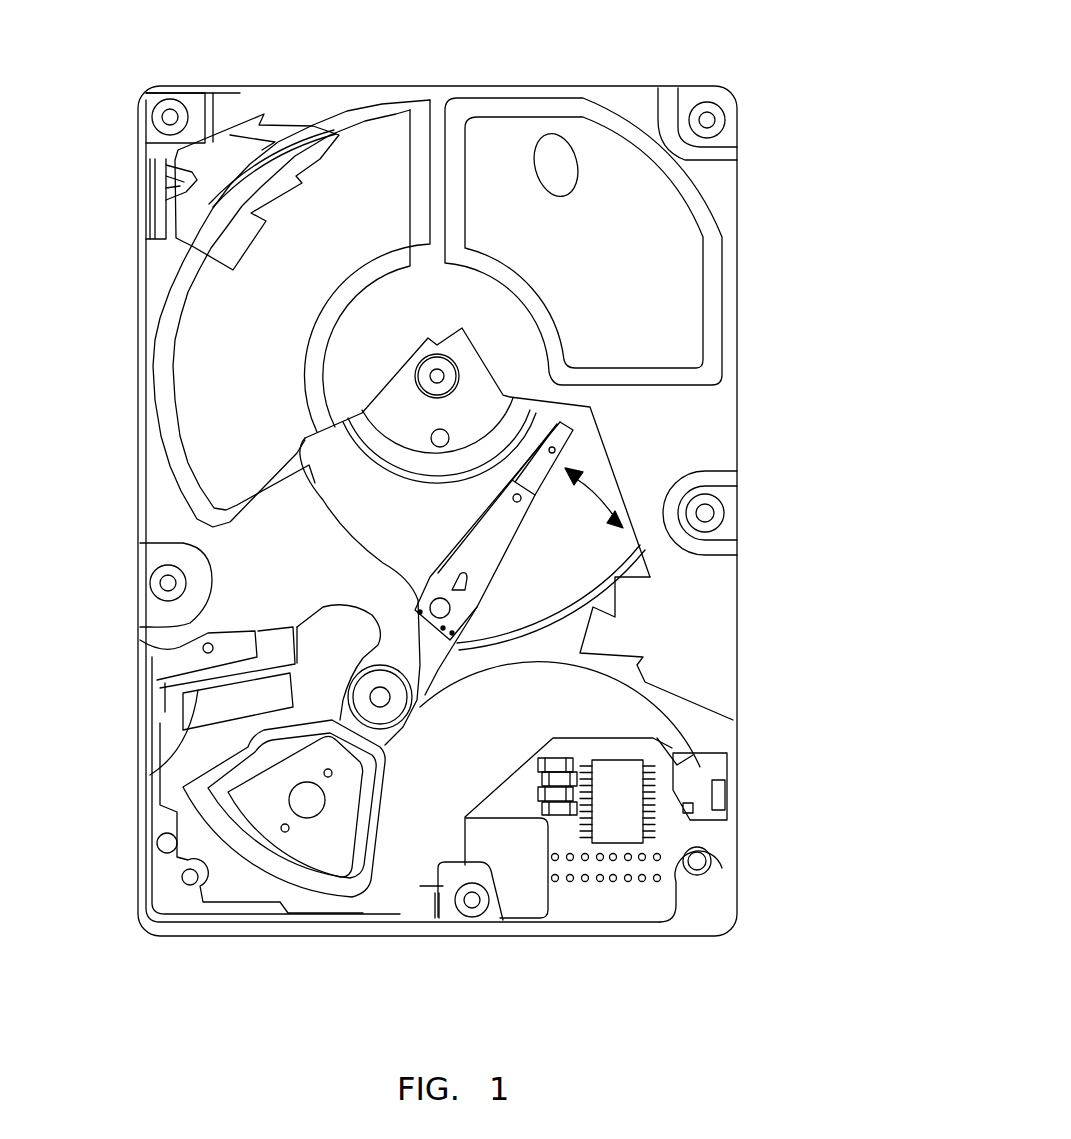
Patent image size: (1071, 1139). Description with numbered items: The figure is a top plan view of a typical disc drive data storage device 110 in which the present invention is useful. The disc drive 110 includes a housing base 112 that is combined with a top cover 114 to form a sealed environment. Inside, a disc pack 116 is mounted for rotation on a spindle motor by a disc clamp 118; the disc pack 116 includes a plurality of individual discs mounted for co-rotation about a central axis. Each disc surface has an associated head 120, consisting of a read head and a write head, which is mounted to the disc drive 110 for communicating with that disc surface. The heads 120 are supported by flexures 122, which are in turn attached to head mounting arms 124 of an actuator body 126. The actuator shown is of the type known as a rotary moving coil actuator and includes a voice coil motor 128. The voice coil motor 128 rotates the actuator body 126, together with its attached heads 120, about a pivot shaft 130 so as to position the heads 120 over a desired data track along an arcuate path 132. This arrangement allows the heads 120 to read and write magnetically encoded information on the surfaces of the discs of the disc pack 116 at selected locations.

The disc drive data storage device 110 is at (125, 473).
The housing base 112 is at (735, 862).
The top cover 114 is at (438, 103).
The disc pack 116 is at (598, 580).
The disc clamp 118 is at (473, 395).
The head 120 is at (598, 424).
The flexure 122 is at (493, 535).
The head mounting arm 124 is at (640, 662).
The actuator body 126 is at (348, 648).
The voice coil motor 128 is at (150, 775).
The pivot shaft 130 is at (388, 700).
The arcuate path 132 is at (602, 490).